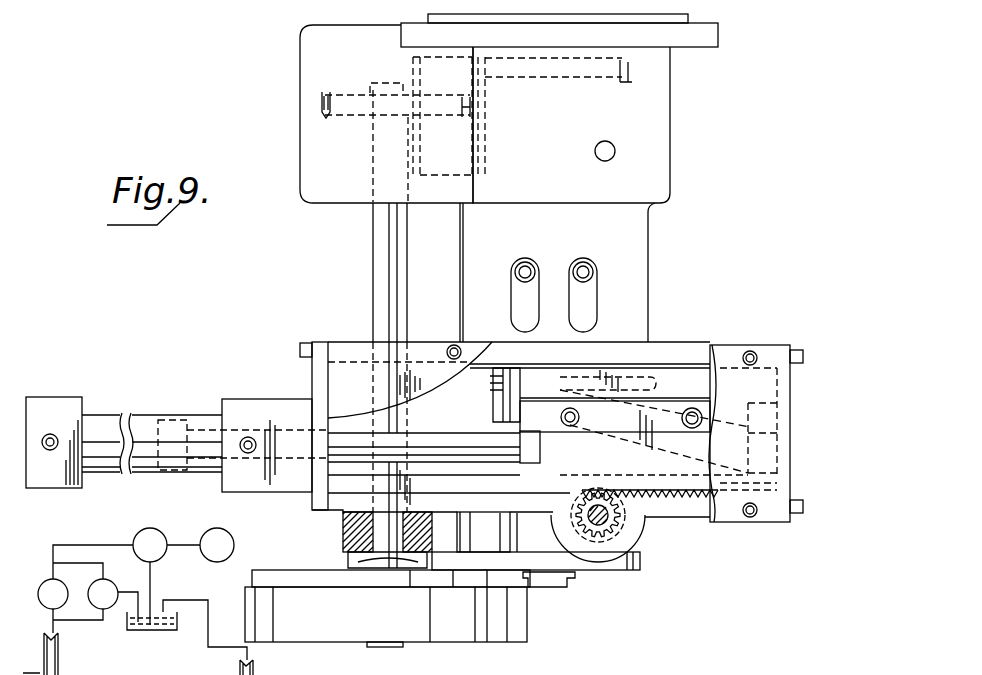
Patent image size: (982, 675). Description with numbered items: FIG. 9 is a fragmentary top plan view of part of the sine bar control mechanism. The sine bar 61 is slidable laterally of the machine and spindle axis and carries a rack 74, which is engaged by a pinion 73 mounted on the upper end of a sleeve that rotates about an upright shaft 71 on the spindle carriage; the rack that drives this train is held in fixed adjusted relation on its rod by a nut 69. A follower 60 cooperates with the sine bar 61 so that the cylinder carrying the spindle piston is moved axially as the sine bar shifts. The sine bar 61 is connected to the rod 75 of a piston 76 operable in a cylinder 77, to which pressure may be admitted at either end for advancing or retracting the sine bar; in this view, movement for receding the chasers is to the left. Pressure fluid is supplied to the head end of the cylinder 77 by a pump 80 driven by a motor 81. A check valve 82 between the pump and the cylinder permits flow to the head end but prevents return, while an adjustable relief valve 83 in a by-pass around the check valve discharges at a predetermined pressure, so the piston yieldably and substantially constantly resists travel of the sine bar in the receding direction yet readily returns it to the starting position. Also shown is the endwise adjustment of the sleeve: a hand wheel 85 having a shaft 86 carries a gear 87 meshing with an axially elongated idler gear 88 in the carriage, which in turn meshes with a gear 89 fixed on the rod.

The follower 60 is at (587, 420).
The sine bar 61 is at (557, 490).
The nut 69 is at (553, 586).
The upright shaft 71 is at (605, 520).
The pinion 73 is at (625, 528).
The rack 74 is at (705, 496).
The rod 75 is at (472, 412).
The piston 76 is at (173, 420).
The cylinder 77 is at (112, 415).
The pump 80 is at (158, 531).
The motor 81 is at (232, 535).
The check valve 82 is at (47, 581).
The adjustable relief valve 83 is at (118, 586).
The hand wheel 85 is at (527, 633).
The shaft 86 is at (373, 272).
The gear 87 is at (318, 125).
The idler gear 88 is at (413, 60).
The gear 89 is at (634, 76).